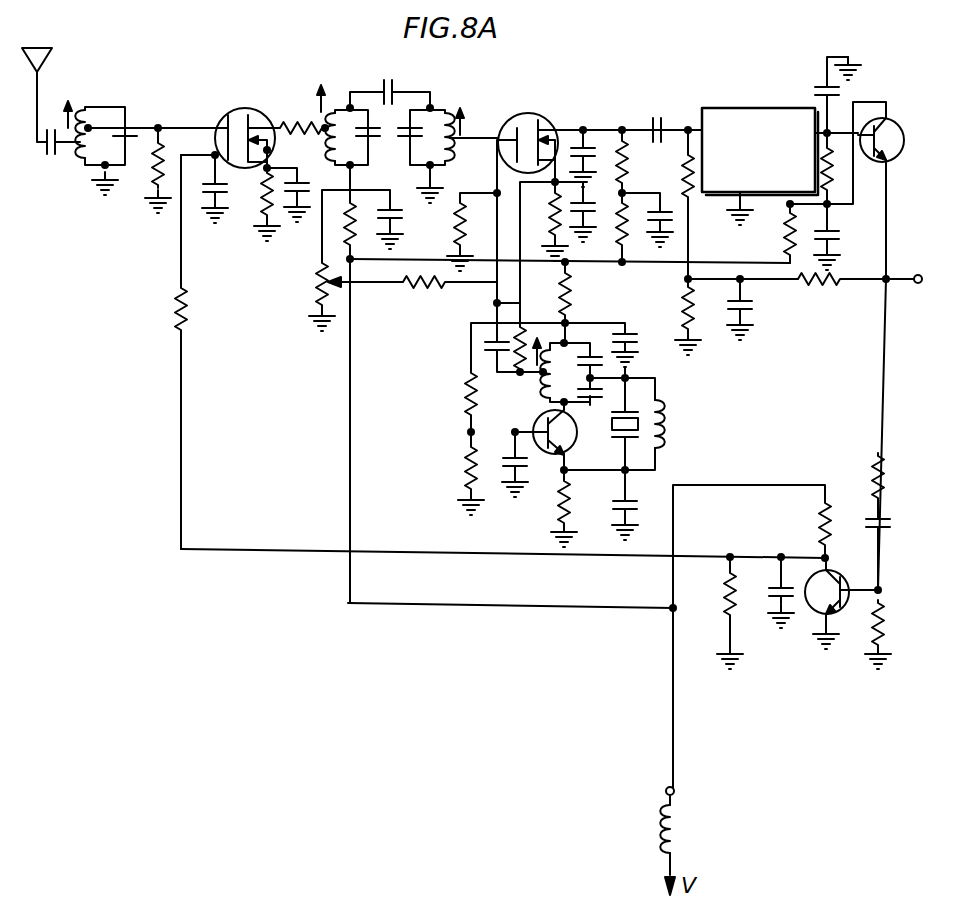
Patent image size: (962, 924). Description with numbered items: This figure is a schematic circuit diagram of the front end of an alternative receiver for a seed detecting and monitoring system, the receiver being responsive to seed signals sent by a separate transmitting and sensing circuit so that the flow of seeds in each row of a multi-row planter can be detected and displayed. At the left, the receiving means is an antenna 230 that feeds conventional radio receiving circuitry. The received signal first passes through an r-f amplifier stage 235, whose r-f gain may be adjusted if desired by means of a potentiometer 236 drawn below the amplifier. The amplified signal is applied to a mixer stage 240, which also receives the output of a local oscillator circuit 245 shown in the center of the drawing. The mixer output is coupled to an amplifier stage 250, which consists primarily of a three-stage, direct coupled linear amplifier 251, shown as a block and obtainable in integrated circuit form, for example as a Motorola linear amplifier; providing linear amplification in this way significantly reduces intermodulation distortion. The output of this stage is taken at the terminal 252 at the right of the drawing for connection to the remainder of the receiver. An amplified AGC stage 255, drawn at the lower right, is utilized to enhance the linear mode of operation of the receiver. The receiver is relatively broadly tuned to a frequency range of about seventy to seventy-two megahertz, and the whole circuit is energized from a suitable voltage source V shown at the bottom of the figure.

The antenna 230 is at (48, 50).
The r-f amplifier stage 235 is at (251, 97).
The potentiometer 236 is at (312, 284).
The mixer stage 240 is at (540, 112).
The local oscillator circuit 245 is at (450, 457).
The amplifier stage 250 is at (803, 146).
The three-stage, direct coupled linear amplifier 251 is at (725, 108).
The output terminal 252 is at (918, 274).
The amplified AGC stage 255 is at (822, 655).